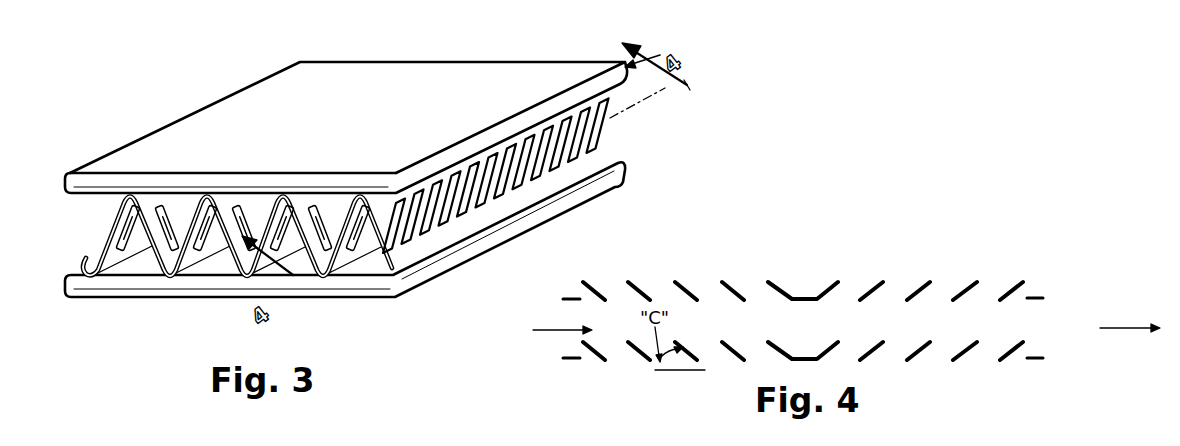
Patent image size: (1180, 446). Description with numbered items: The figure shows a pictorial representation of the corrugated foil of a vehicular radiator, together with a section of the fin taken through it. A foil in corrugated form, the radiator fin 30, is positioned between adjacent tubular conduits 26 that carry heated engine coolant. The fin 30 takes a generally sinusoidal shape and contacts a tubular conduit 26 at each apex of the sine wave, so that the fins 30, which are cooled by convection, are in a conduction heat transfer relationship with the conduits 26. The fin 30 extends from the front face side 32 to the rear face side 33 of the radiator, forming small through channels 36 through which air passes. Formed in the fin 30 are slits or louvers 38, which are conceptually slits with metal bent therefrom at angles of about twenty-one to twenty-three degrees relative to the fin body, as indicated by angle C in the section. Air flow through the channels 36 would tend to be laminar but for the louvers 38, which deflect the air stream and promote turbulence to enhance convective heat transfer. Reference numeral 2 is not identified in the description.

In FIG. 3, the heat exchanger assembly 2 is at (52, 192).
In FIG. 3, the tubular conduit 26 is at (130, 297).
In FIG. 3, the radiator fin 30 is at (393, 227).
In FIG. 4, the front face side 32 is at (525, 333).
In FIG. 3, the rear face side 33 is at (687, 85).
In FIG. 4, the rear face side 33 is at (1109, 331).
In FIG. 3, the through channel 36 is at (366, 266).
In FIG. 3, the louver 38 is at (470, 206).
In FIG. 4, the louver 38 is at (643, 292).